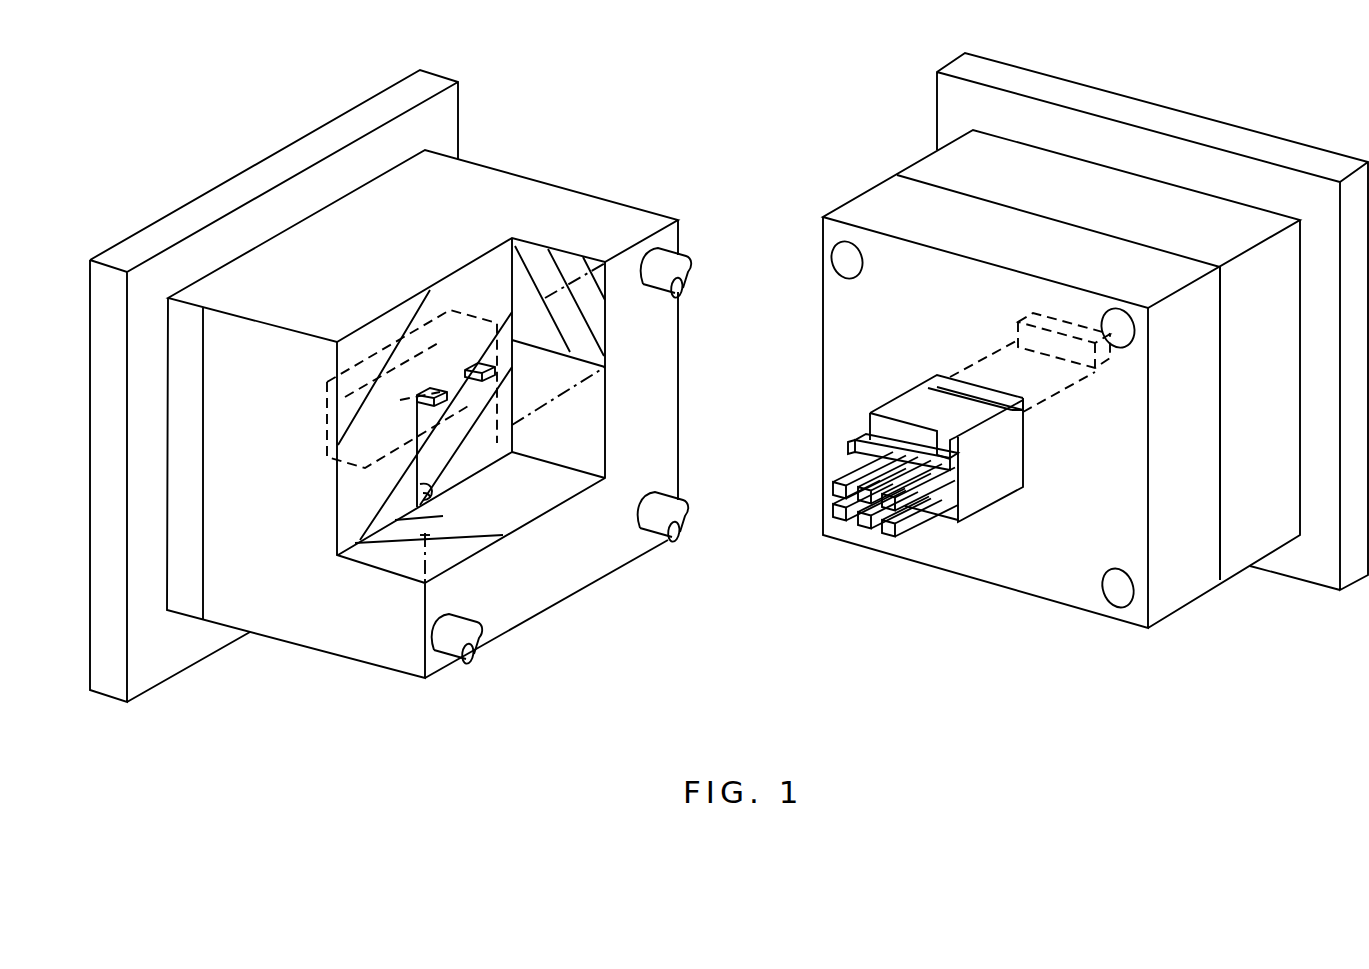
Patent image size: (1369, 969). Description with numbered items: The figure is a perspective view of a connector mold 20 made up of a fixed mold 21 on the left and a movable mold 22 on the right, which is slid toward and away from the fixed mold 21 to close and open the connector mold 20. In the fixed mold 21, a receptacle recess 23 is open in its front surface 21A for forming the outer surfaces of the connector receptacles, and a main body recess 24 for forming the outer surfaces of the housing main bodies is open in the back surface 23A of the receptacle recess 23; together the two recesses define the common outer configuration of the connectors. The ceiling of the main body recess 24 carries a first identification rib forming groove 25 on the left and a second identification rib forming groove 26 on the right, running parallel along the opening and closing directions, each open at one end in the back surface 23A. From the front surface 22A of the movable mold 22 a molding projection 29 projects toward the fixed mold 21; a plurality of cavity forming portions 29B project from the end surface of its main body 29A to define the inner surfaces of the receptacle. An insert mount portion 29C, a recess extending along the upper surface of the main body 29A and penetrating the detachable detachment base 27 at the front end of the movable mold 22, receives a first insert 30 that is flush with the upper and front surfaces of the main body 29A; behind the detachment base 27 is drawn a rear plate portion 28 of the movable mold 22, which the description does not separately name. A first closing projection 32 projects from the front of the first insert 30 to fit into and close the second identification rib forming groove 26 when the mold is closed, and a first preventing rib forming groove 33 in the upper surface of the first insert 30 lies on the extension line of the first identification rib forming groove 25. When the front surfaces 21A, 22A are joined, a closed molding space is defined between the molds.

The connector mold 20 is at (633, 67).
The fixed mold 21 is at (606, 157).
The front surface of fixed mold 21A is at (636, 546).
The movable mold 22 is at (899, 131).
The front surface of movable mold 22A is at (1025, 578).
The receptacle recess 23 is at (560, 502).
The back surface 23A is at (430, 497).
The main body recess 24 is at (410, 495).
The first identification rib forming groove 25 is at (400, 400).
The second identification rib forming groove 26 is at (440, 390).
The detachment base 27 is at (1183, 590).
The mounting plate 28 is at (1257, 552).
The molding projection 29 is at (933, 537).
The main body 29A is at (987, 490).
The cavity forming portions 29B is at (885, 535).
The insert mount portion 29C is at (887, 410).
The first insert 30 is at (916, 391).
The first closing projection 32 is at (850, 443).
The first preventing rib forming groove 33 is at (980, 413).